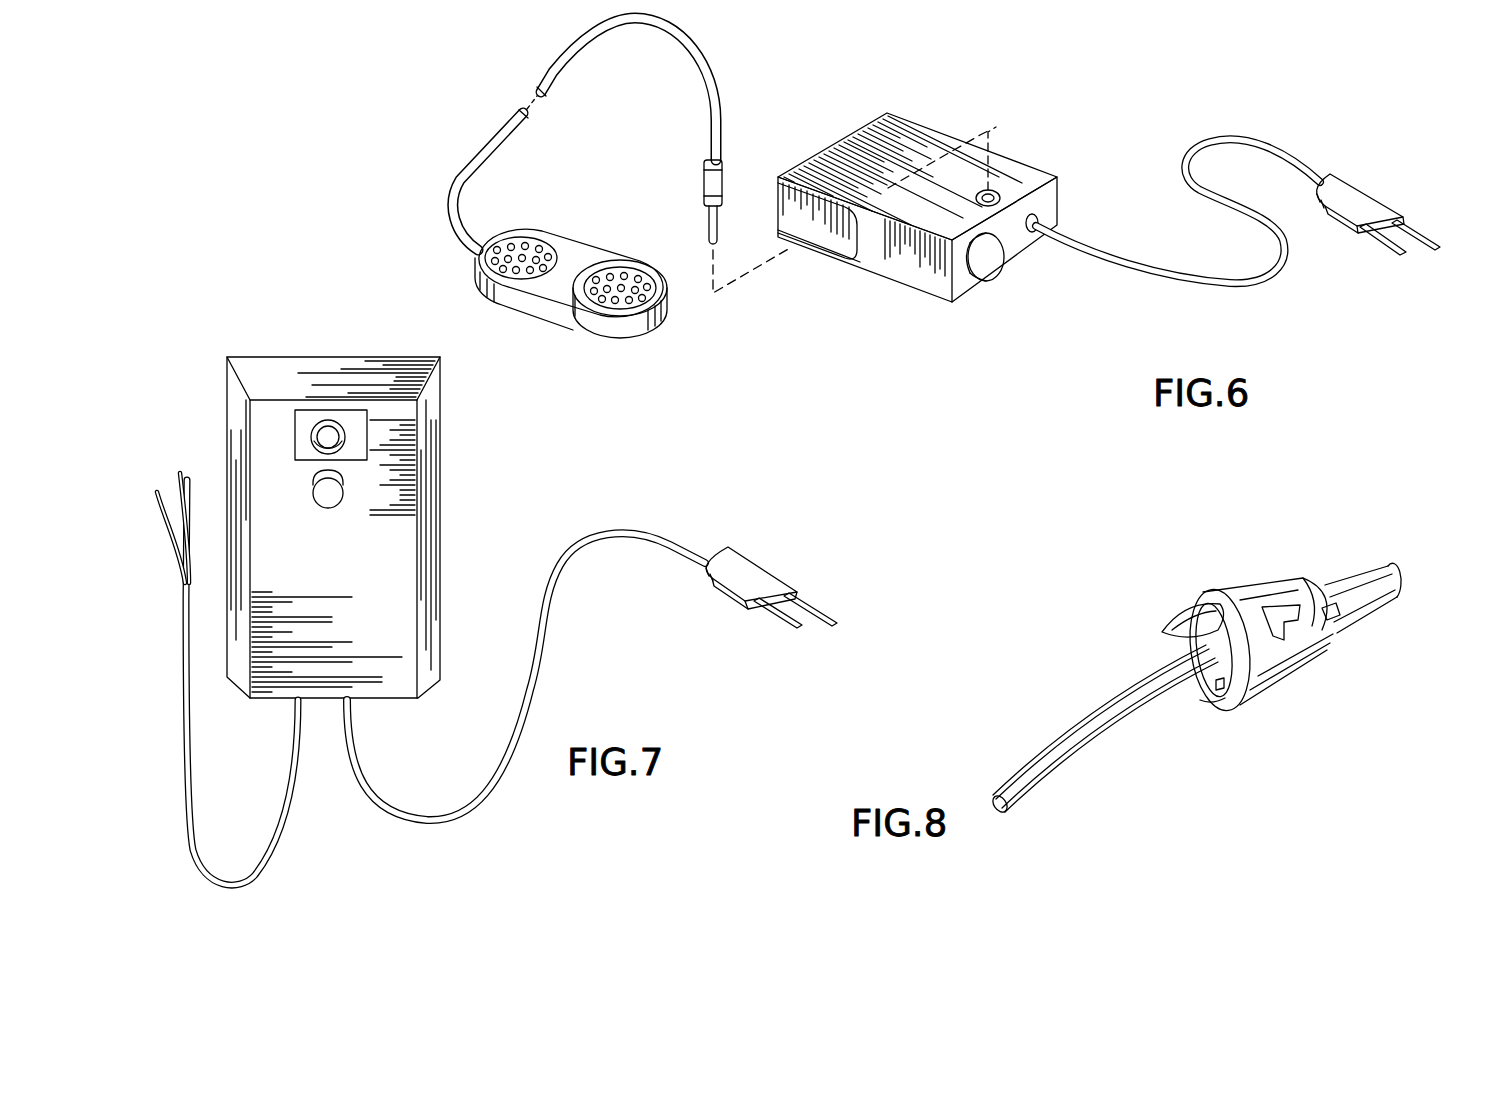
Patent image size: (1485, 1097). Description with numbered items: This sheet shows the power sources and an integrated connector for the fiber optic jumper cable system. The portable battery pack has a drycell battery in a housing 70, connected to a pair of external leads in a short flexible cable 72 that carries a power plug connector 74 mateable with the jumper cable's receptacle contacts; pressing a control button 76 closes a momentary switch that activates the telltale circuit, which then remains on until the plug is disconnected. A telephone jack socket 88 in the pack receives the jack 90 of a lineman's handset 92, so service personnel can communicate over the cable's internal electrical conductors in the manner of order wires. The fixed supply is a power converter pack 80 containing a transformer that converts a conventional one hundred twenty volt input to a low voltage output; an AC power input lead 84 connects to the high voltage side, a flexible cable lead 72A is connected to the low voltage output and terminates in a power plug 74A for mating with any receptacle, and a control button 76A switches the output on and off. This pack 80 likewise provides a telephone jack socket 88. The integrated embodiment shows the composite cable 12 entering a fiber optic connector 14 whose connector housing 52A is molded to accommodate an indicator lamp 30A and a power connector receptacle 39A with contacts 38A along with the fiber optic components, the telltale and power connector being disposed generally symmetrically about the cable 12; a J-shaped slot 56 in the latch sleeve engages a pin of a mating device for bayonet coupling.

In FIG. 8, the composite cable 12 is at (1063, 740).
In FIG. 8, the fiber optic connector 14 is at (1355, 590).
In FIG. 8, the indicator lamp 30A is at (1175, 625).
In FIG. 8, the contacts 38A is at (1282, 680).
In FIG. 8, the power connector receptacle 39A is at (1212, 703).
In FIG. 8, the connector housing 52A is at (1252, 598).
In FIG. 8, the J-shaped slot 56 is at (1338, 612).
In FIG. 6, the housing 70 is at (887, 143).
In FIG. 6, the flexible cable 72 is at (1250, 142).
In FIG. 7, the flexible cable lead 72A is at (604, 528).
In FIG. 6, the power plug connector 74 is at (1372, 202).
In FIG. 7, the power plug 74A is at (745, 568).
In FIG. 6, the control button 76 is at (986, 268).
In FIG. 7, the control button 76A is at (333, 500).
In FIG. 7, the power converter pack 80 is at (428, 528).
In FIG. 7, the AC power input lead 84 is at (183, 757).
In FIG. 6, the telephone jack socket 88 is at (996, 196).
In FIG. 7, the telephone jack socket 88 is at (330, 425).
In FIG. 6, the jack 90 is at (695, 188).
In FIG. 6, the lineman's handset 92 is at (538, 310).